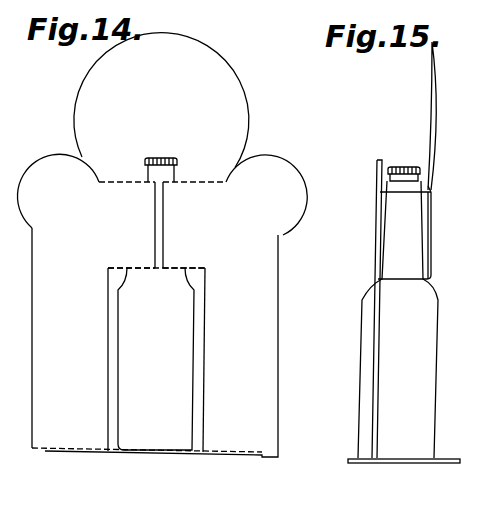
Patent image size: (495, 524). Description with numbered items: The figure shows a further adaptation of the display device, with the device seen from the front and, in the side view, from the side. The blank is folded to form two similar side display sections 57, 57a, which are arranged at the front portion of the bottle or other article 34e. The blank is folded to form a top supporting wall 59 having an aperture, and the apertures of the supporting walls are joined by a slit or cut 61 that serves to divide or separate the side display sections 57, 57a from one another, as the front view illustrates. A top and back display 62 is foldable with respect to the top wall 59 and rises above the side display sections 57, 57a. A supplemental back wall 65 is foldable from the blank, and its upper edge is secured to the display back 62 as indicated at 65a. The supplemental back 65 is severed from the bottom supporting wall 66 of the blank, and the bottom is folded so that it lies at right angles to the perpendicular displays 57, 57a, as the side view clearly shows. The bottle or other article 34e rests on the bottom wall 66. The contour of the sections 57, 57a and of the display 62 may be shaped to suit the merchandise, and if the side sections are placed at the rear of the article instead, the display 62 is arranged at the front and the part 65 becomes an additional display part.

In FIG. 14, the side display section 57 is at (285, 175).
In FIG. 15, the side display section 57 is at (373, 347).
In FIG. 14, the side display section 57a is at (43, 160).
In FIG. 14, the top and back display 62 is at (225, 87).
In FIG. 15, the top and back display 62 is at (433, 90).
In FIG. 14, the top supporting wall 59 is at (196, 180).
In FIG. 14, the slit or cut 61 is at (163, 243).
In FIG. 14, the supplemental back wall 65 is at (125, 267).
In FIG. 15, the supplemental back wall 65 is at (431, 250).
In FIG. 15, the securing point of supplemental back wall 65a is at (430, 188).
In FIG. 14, the bottle or other article 34e is at (140, 433).
In FIG. 15, the bottle or other article 34e is at (432, 335).
In FIG. 15, the bottom supporting wall 66 is at (452, 465).